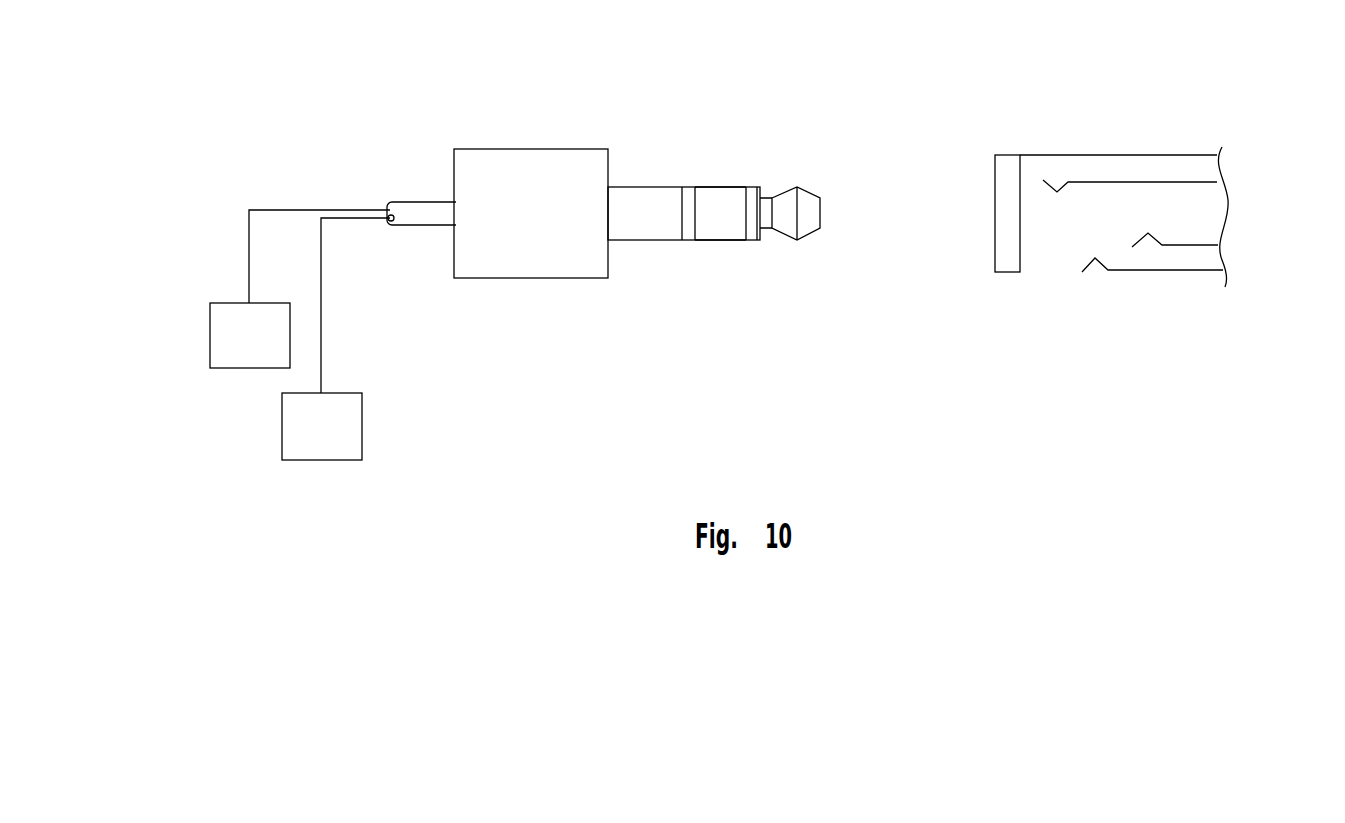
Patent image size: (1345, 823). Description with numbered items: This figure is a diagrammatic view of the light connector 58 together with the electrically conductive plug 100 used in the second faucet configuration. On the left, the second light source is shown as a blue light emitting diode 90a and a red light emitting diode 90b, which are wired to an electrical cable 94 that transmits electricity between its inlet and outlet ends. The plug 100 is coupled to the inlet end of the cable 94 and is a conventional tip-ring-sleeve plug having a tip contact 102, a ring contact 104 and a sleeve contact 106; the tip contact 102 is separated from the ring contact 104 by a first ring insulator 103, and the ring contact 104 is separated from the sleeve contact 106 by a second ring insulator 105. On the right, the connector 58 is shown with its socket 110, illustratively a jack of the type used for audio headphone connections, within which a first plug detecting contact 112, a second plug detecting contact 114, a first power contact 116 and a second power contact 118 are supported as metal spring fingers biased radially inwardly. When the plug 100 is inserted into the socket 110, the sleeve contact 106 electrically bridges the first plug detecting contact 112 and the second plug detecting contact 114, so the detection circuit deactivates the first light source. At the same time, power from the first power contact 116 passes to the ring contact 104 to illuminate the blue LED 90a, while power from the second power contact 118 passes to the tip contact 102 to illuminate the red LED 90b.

The light connector 58 is at (1144, 183).
The blue light emitting diode 90a is at (212, 337).
The red light emitting diode 90b is at (362, 423).
The electrical cable 94 is at (423, 202).
The electrically conductive plug 100 is at (727, 185).
The tip contact 102 is at (813, 212).
The first ring insulator 103 is at (750, 235).
The ring contact 104 is at (723, 218).
The second ring insulator 105 is at (690, 190).
The sleeve contact 106 is at (645, 230).
The socket 110 is at (1144, 211).
The first plug detecting contact 112 is at (1008, 163).
The second plug detecting contact 114 is at (1055, 192).
The first power contact 116 is at (1097, 262).
The second power contact 118 is at (1148, 237).